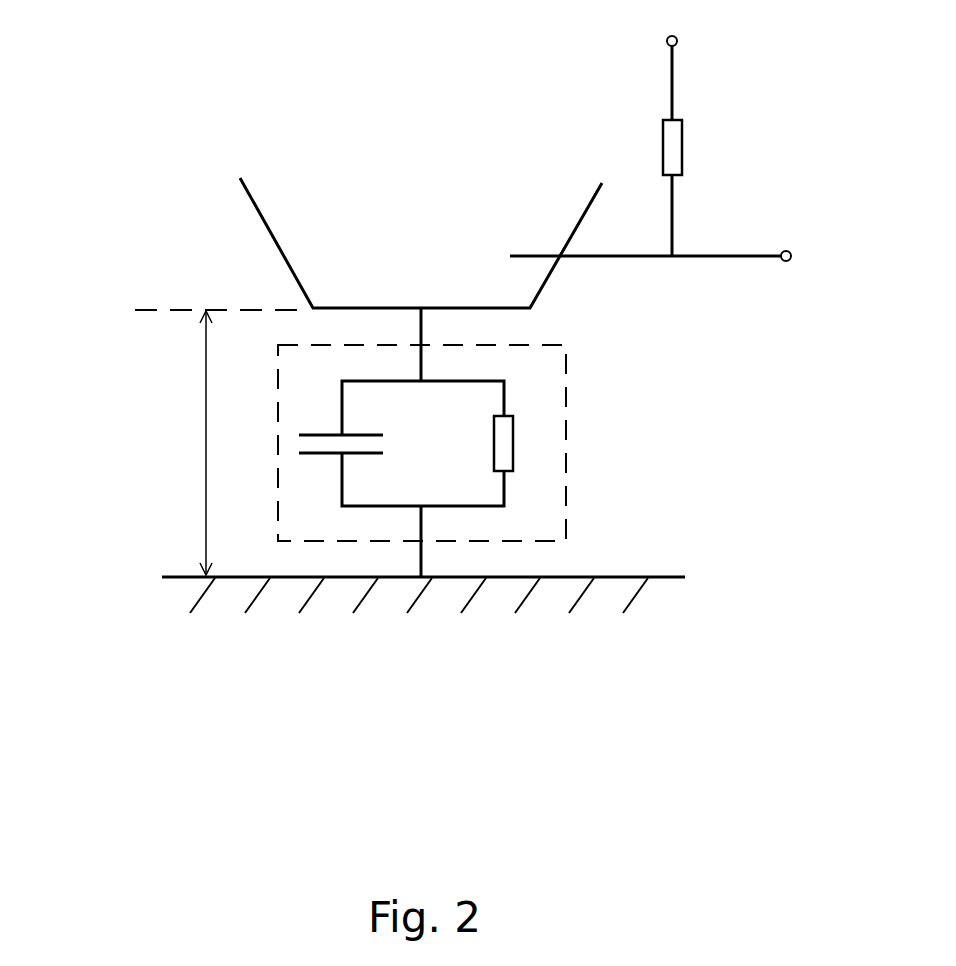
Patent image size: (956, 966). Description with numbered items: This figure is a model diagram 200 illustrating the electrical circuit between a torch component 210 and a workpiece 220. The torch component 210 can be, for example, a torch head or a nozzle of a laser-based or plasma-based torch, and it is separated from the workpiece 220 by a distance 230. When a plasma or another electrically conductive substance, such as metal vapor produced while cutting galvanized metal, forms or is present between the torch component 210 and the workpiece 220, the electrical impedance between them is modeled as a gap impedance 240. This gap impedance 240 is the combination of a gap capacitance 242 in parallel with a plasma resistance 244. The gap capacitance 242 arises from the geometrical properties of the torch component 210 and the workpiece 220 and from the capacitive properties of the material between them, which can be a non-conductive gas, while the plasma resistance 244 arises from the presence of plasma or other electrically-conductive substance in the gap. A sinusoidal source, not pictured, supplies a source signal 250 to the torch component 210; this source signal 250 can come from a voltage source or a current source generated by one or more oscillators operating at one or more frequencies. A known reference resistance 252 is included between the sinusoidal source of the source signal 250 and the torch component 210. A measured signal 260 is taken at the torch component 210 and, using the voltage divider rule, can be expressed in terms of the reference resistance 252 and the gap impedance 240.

The model diagram 200 is at (88, 158).
The torch component 210 is at (262, 222).
The workpiece 220 is at (675, 576).
The distance 230 is at (206, 454).
The gap impedance 240 is at (566, 390).
The gap capacitance 242 is at (357, 433).
The plasma resistance 244 is at (494, 446).
The source signal 250 is at (677, 37).
The reference resistance 252 is at (682, 128).
The measured signal 260 is at (791, 253).